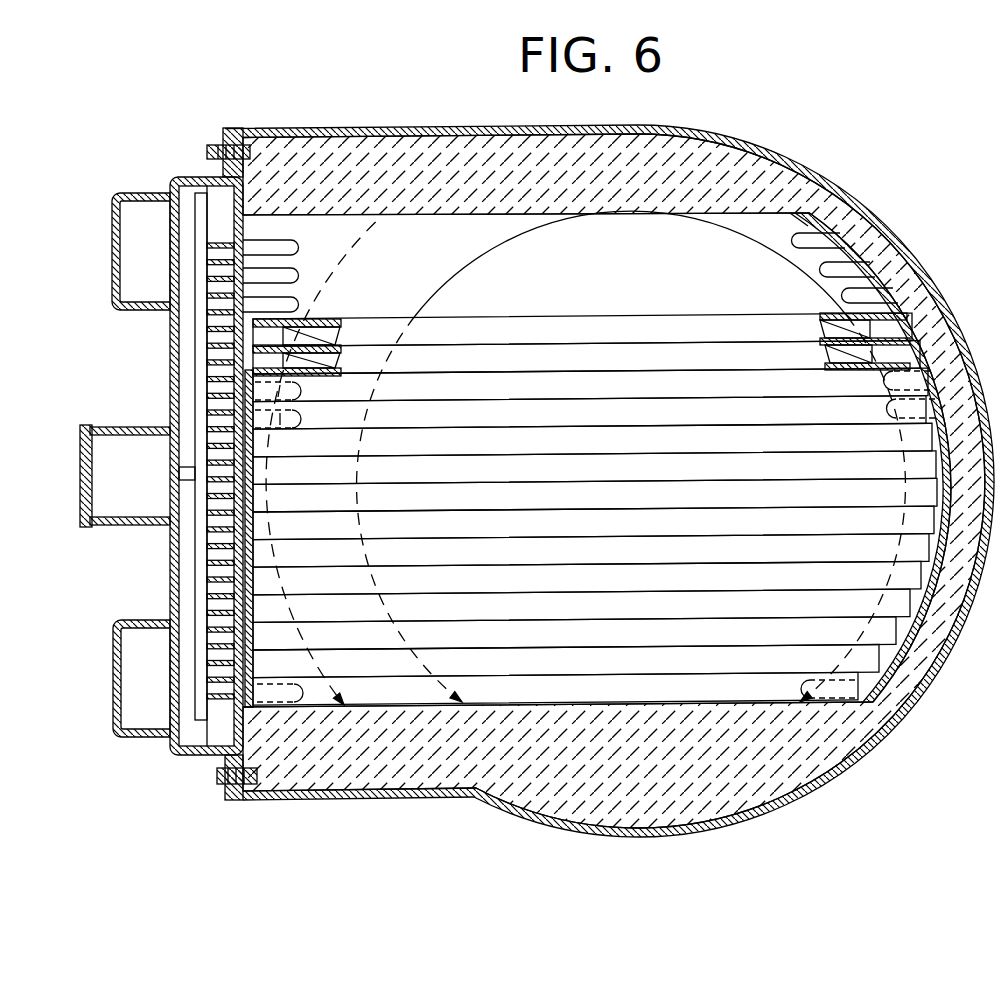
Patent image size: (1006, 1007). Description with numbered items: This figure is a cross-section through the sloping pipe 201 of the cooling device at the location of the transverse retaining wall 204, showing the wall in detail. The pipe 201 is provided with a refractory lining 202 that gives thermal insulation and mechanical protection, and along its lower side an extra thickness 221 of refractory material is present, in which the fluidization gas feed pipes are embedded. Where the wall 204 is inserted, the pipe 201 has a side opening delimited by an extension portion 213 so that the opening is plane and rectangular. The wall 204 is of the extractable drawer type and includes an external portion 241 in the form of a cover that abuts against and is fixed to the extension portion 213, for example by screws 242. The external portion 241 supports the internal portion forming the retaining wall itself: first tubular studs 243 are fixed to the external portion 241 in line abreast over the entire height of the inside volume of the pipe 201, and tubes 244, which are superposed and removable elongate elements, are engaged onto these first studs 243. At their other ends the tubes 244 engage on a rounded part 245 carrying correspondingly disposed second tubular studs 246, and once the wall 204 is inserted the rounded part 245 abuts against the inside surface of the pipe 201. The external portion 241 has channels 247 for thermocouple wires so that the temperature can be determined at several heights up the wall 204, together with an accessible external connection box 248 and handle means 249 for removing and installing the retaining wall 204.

The pipe 201 is at (752, 143).
The refractory lining 202 is at (780, 165).
The transverse retaining wall 204 is at (593, 312).
The extension portion 213 is at (326, 147).
The extra thickness of refractory material 221 is at (650, 750).
The external portion 241 is at (185, 177).
The screws 242 is at (212, 150).
The first tubular studs 243 is at (290, 365).
The tubes 244 is at (528, 358).
The rounded part 245 is at (805, 215).
The second tubular studs 246 is at (862, 345).
The channels 247 is at (227, 577).
The external connection box 248 is at (118, 427).
The handle means 249 is at (113, 215).